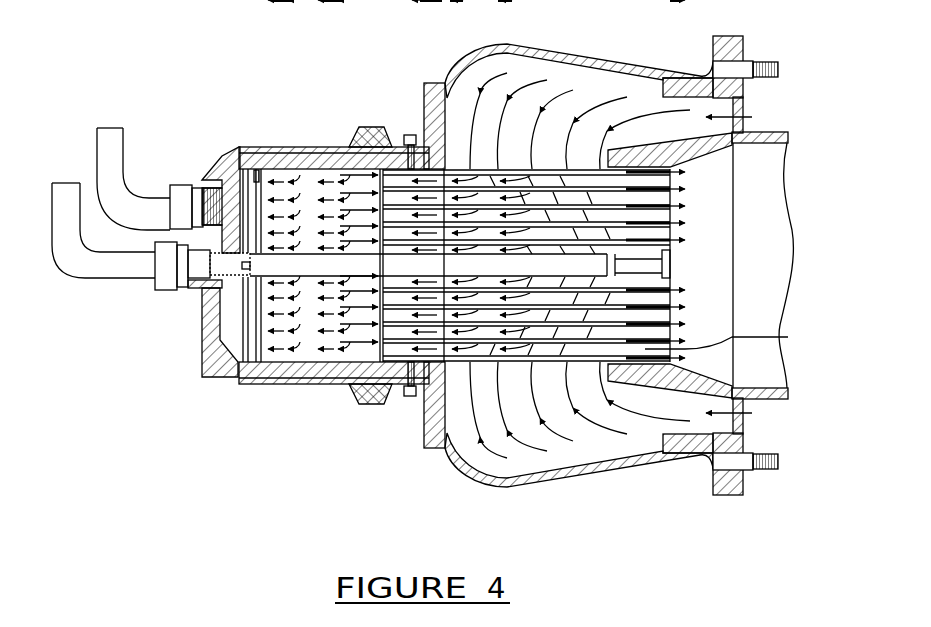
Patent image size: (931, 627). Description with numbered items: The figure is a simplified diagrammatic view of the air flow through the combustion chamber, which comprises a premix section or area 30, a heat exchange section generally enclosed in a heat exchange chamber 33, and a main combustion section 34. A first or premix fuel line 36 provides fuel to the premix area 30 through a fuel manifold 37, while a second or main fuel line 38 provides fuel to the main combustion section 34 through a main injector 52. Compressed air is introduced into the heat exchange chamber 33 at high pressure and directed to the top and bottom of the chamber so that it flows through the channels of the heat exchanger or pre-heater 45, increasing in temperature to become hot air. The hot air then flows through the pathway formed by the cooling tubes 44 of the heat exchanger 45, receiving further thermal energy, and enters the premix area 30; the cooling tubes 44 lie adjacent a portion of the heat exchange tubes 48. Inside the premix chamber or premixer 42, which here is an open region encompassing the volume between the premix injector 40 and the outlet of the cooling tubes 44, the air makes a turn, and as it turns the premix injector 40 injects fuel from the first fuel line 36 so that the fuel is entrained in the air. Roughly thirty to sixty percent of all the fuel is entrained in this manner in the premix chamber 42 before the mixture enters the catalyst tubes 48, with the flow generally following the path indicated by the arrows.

The premix section or area 30 is at (250, 144).
The heat exchange chamber 33 is at (466, 63).
The main combustion section 34 is at (772, 227).
The first or premix fuel line 36 is at (120, 160).
The fuel manifold 37 is at (235, 325).
The second or main fuel line 38 is at (68, 238).
The premix injector 40 is at (262, 175).
The premix chamber or premixer 42 is at (312, 175).
The cooling tubes 44 is at (398, 166).
The heat exchanger or pre-heater 45 is at (517, 134).
The catalyst tubes / heat exchange tubes 48 is at (548, 164).
The main injector 52 is at (784, 337).